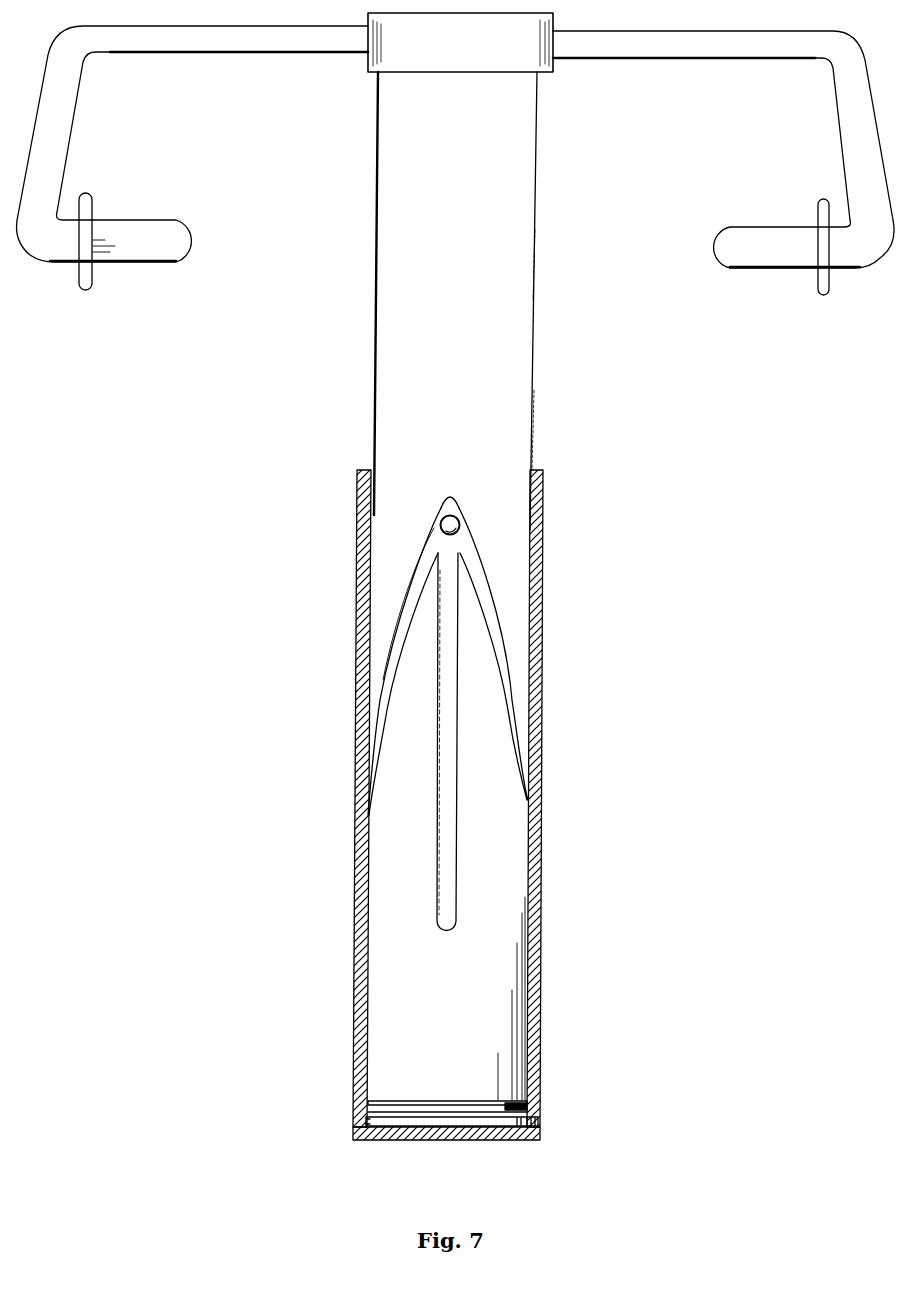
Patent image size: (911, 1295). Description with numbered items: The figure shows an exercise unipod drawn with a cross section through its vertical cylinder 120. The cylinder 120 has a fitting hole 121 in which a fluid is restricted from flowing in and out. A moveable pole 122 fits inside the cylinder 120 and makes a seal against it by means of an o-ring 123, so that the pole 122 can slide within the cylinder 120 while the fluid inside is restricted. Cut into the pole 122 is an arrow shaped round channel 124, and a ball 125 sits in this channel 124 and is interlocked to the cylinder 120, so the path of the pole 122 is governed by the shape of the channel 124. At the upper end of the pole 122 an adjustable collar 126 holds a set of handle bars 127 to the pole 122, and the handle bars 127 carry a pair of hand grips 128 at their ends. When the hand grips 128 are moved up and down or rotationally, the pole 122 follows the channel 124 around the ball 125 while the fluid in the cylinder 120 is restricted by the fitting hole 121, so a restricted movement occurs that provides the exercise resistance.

The vertical cylinder 120 is at (360, 548).
The fitting hole 121 is at (530, 1121).
The moveable pole 122 is at (392, 872).
The o-ring 123 is at (443, 1103).
The arrow shaped round channel 124 is at (413, 593).
The ball 125 is at (452, 520).
The adjustable collar 126 is at (450, 58).
The handle bars 127 is at (661, 43).
The hand grips 128 is at (741, 250).